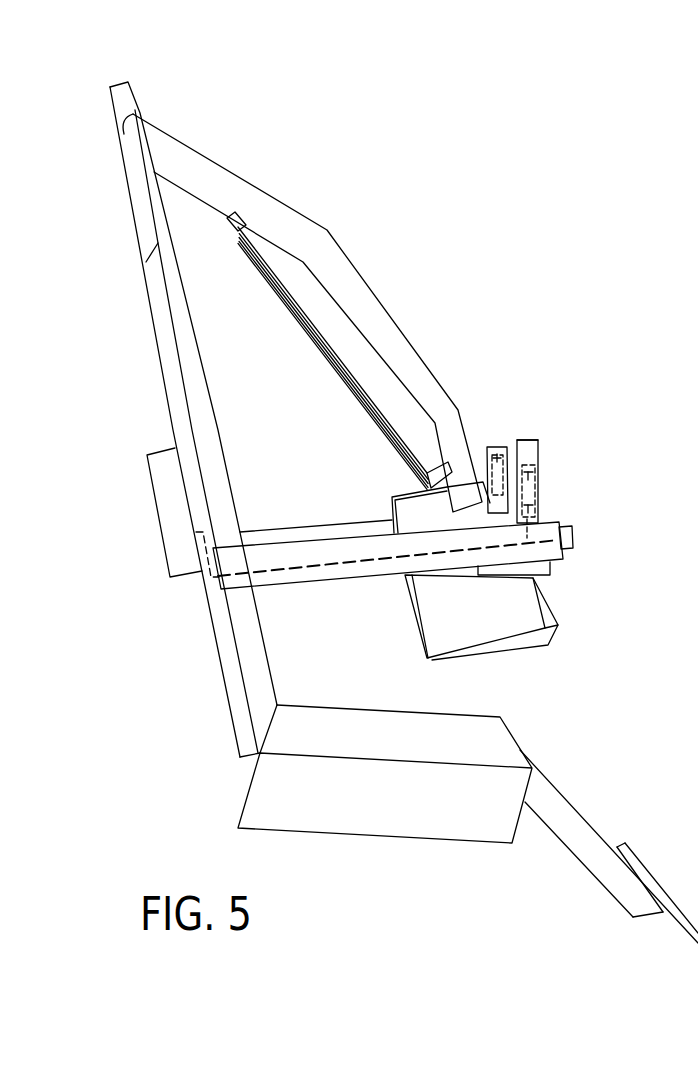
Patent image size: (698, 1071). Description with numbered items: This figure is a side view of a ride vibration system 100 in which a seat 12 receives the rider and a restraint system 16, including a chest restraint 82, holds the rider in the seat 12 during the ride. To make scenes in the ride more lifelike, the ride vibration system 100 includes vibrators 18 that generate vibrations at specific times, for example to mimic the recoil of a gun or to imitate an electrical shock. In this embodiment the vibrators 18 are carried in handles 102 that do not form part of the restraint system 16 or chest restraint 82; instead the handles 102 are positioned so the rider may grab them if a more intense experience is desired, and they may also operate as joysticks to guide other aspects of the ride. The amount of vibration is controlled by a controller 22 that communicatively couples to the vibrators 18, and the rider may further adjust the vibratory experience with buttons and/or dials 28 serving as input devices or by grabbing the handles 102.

The seat 12 is at (207, 788).
The restraint system 16 is at (388, 234).
The vibrators 18 is at (497, 446).
The controller 22 is at (157, 517).
The buttons and/or dials 28 is at (575, 536).
The chest restraint 82 is at (297, 290).
The ride vibration system 100 is at (568, 768).
The handles 102 is at (563, 433).